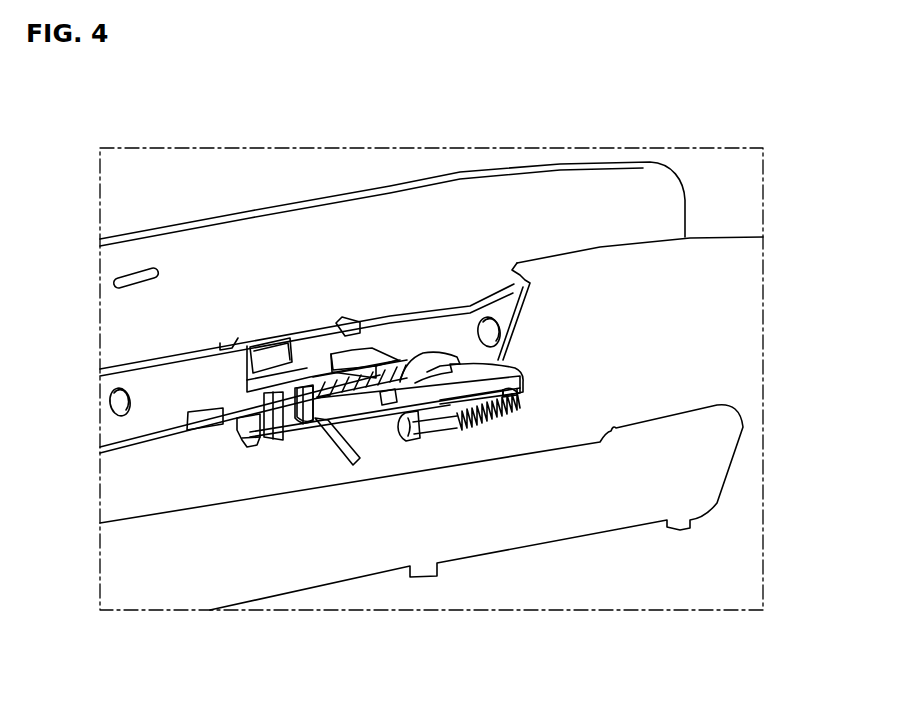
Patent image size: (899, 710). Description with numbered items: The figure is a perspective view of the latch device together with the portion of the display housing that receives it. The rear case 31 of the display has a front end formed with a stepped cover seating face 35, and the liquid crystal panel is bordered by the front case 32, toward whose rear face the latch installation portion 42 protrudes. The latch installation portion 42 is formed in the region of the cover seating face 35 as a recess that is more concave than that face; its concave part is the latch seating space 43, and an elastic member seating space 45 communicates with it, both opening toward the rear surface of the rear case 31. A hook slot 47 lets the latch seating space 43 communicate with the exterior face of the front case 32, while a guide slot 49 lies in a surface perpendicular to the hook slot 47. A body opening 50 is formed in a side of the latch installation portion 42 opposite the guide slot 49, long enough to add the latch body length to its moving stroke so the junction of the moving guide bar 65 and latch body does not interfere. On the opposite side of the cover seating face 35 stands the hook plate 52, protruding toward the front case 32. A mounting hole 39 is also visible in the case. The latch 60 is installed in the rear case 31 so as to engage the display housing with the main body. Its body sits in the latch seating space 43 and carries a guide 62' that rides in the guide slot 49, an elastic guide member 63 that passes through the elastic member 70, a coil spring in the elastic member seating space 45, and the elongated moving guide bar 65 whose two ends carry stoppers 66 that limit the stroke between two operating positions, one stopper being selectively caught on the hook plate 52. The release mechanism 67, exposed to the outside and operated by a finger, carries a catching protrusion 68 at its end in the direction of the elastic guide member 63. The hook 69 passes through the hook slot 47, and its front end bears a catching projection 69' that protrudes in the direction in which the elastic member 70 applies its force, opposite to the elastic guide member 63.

The rear case 31 is at (630, 229).
The front case 32 is at (392, 172).
The cover seating face 35 is at (273, 360).
The mounting hole 39 is at (480, 224).
The latch installation portion 42 is at (354, 296).
The latch seating space 43 is at (357, 534).
The elastic member seating space 45 is at (362, 372).
The hook slot 47 is at (244, 236).
The guide slot 49 is at (151, 458).
The body opening 50 is at (334, 326).
The hook plate 52 is at (310, 245).
The latch 60 is at (537, 376).
The guide 62' is at (402, 528).
The elastic guide member 63 is at (466, 539).
The moving guide bar 65 is at (630, 343).
The stopper 66 is at (518, 528).
The release mechanism 67 is at (440, 524).
The catching protrusion 68 is at (385, 268).
The hook 69 is at (311, 530).
The catching projection 69' is at (288, 527).
The elastic member 70 is at (518, 530).